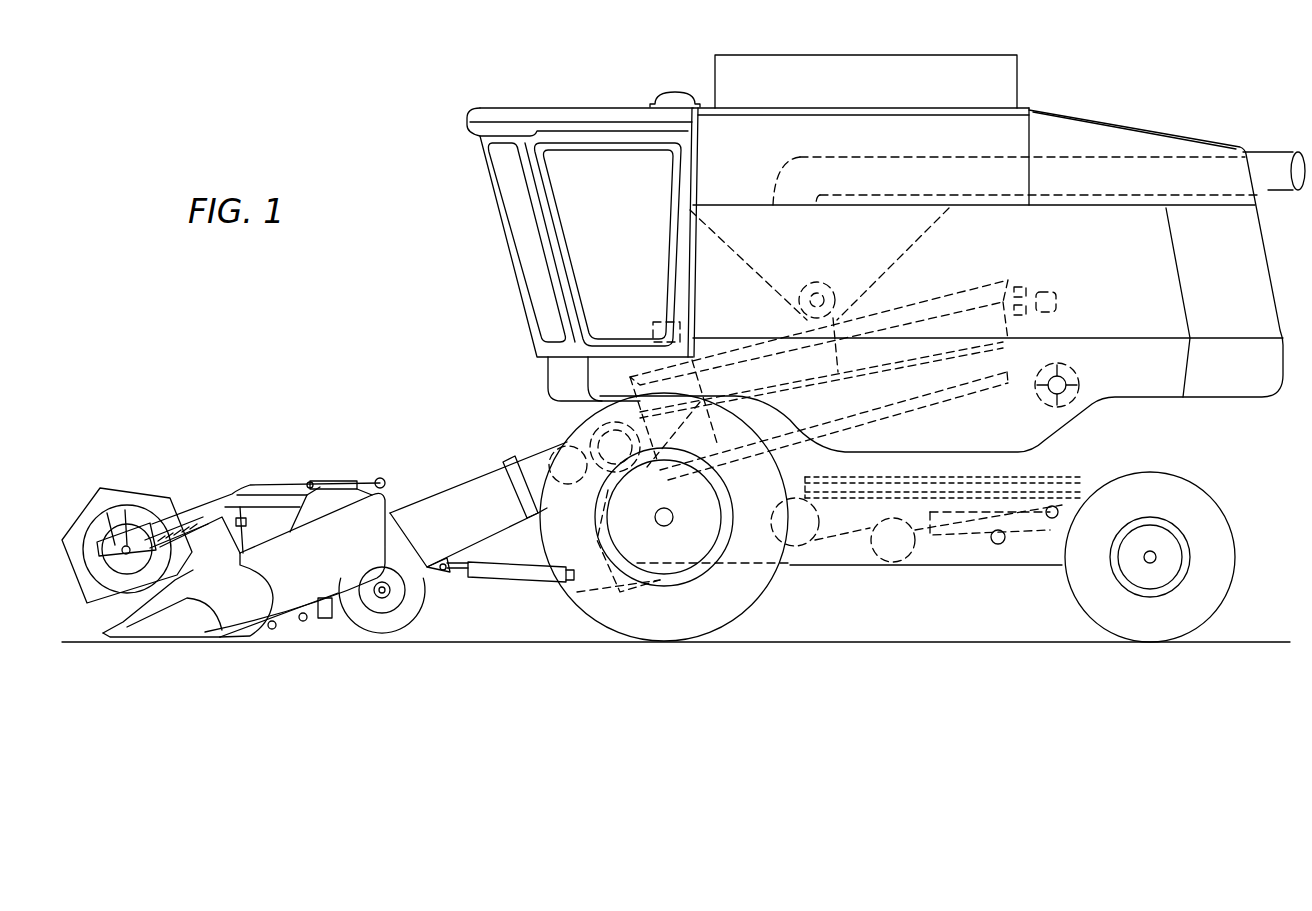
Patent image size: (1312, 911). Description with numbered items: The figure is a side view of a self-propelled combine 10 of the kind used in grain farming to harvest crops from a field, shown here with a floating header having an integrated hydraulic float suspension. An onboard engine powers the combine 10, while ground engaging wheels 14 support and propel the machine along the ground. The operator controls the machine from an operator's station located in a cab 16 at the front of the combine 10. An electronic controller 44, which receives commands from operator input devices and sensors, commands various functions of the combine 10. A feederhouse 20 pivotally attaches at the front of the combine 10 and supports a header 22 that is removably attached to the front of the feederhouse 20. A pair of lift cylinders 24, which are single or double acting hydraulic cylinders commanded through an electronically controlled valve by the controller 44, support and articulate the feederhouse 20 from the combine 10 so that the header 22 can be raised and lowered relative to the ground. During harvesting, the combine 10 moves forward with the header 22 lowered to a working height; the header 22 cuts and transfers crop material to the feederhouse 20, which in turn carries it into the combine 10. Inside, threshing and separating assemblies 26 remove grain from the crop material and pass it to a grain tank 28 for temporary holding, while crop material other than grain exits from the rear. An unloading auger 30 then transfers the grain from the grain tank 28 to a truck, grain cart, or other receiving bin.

The combine 10 is at (436, 82).
The ground engaging wheels 14 is at (690, 650).
The cab 16 is at (501, 298).
The feederhouse 20 is at (456, 473).
The header 22 is at (219, 481).
The lift cylinders 24 is at (487, 587).
The threshing and separating assemblies 26 is at (914, 423).
The grain tank 28 is at (862, 96).
The unloading auger 30 is at (1092, 176).
The electronic controller 44 is at (673, 337).